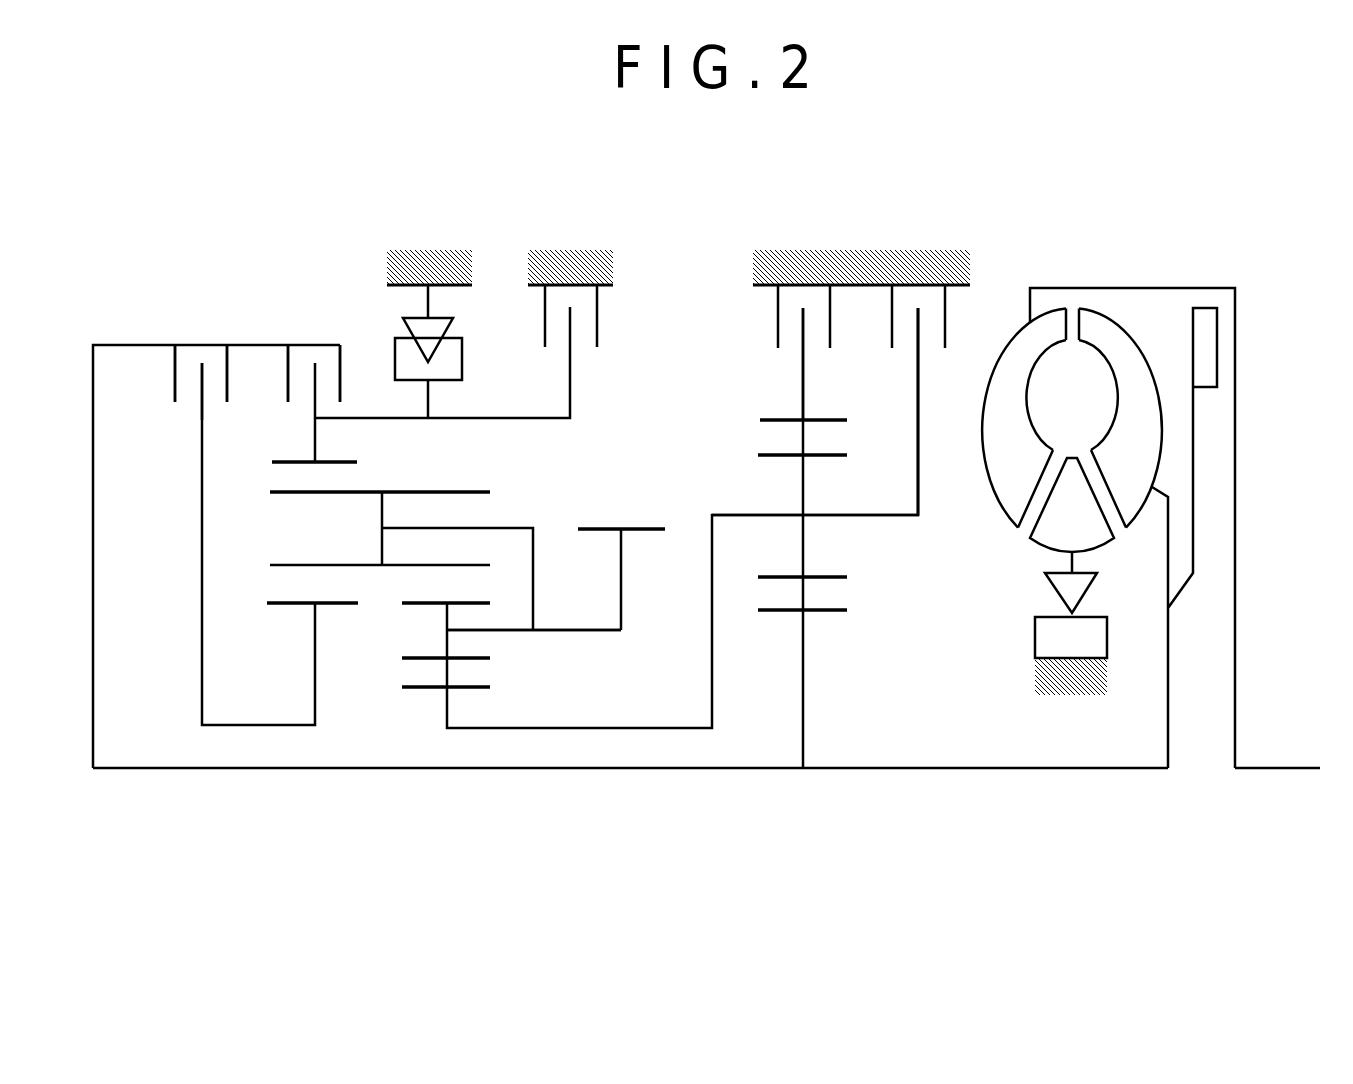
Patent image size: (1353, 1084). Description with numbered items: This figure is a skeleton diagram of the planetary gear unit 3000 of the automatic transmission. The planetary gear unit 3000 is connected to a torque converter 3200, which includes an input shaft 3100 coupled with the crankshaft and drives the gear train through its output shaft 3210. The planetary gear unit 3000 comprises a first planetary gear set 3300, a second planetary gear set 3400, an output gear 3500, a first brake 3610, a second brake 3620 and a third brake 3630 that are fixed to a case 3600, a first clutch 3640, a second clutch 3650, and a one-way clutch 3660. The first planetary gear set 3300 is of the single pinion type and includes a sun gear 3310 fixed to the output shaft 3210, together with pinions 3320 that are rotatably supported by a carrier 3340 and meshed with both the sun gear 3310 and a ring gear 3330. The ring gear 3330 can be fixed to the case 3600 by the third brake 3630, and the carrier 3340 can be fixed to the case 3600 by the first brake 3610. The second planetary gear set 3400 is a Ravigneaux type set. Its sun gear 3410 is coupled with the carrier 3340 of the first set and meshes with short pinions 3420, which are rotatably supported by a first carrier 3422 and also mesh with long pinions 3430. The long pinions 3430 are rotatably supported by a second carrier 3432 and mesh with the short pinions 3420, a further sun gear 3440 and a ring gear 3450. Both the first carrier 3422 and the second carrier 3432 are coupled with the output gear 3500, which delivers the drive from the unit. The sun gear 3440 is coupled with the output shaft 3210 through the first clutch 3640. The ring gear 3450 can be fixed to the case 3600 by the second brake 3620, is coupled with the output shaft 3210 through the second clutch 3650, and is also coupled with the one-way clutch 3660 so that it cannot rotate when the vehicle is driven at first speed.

The planetary gear unit 3000 is at (1072, 155).
The input shaft 3100 is at (1282, 770).
The torque converter 3200 is at (1117, 272).
The output shaft 3210 is at (950, 767).
The first planetary gear set 3300 is at (804, 793).
The sun gear S(UD) 3310 is at (838, 652).
The pinions 3320 is at (838, 572).
The ring gear R(UD) 3330 is at (830, 412).
The carrier C(UD) 3340 is at (920, 480).
The second planetary gear set 3400 is at (469, 792).
The sun gear S(D) 3410 is at (514, 694).
The short pinions 3420 is at (390, 628).
The carrier C(1) 3422 is at (507, 632).
The long pinions 3430 is at (511, 486).
The carrier C(2) 3432 is at (468, 526).
The sun gear S(S) 3440 is at (292, 628).
The ring gear R(1) (R(2)) 3450 is at (346, 455).
The output gear 3500 is at (666, 520).
The case 3600 is at (427, 249).
The B1 brake 3610 is at (945, 349).
The B2 brake 3620 is at (626, 369).
The B3 brake 3630 is at (765, 368).
The C1 clutch 3640 is at (163, 372).
The C2 clutch 3650 is at (275, 372).
The one-way clutch F 3660 is at (385, 317).